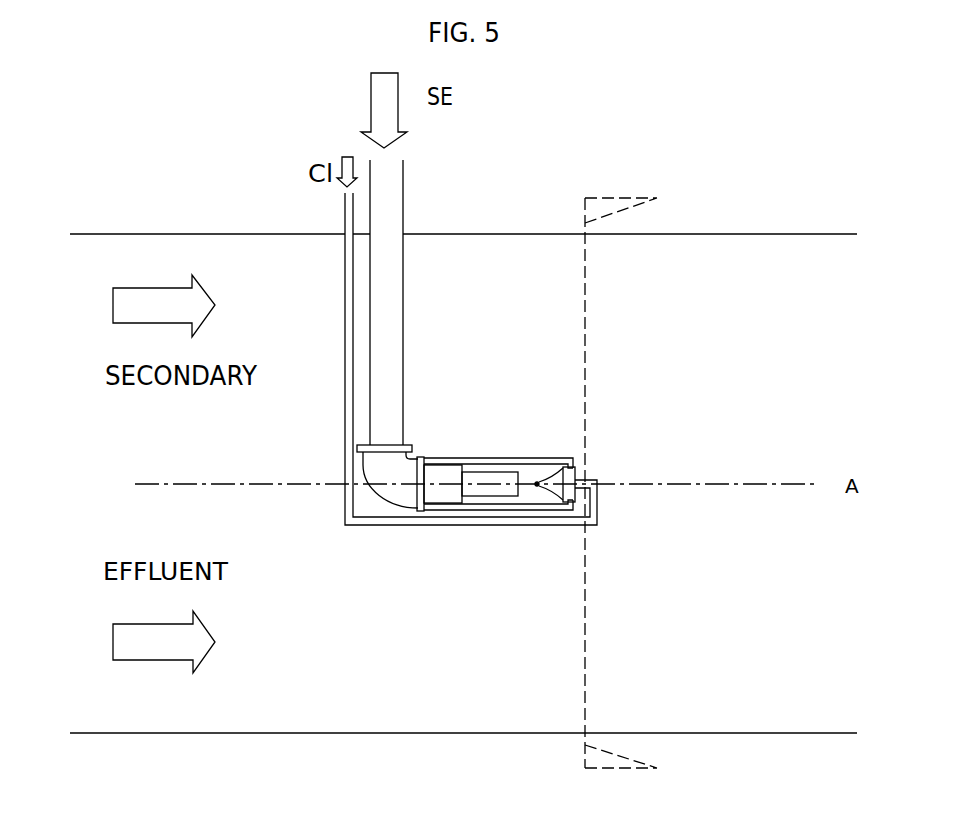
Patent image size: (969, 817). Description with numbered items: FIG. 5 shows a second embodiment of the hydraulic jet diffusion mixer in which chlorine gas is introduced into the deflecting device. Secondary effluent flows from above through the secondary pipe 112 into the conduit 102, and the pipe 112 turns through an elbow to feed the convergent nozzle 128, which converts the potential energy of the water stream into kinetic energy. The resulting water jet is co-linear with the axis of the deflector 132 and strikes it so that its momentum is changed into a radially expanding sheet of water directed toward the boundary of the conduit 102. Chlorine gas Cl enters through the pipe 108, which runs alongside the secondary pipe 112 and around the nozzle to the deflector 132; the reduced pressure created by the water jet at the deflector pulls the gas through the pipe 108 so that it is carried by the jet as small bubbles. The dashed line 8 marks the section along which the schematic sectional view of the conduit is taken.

The line 8— 8 is at (646, 482).
The conduit 102 is at (622, 235).
The pipe 108 is at (353, 357).
The secondary pipe 112 is at (407, 291).
The convergent nozzle 128 is at (485, 472).
The deflector 132 is at (568, 485).